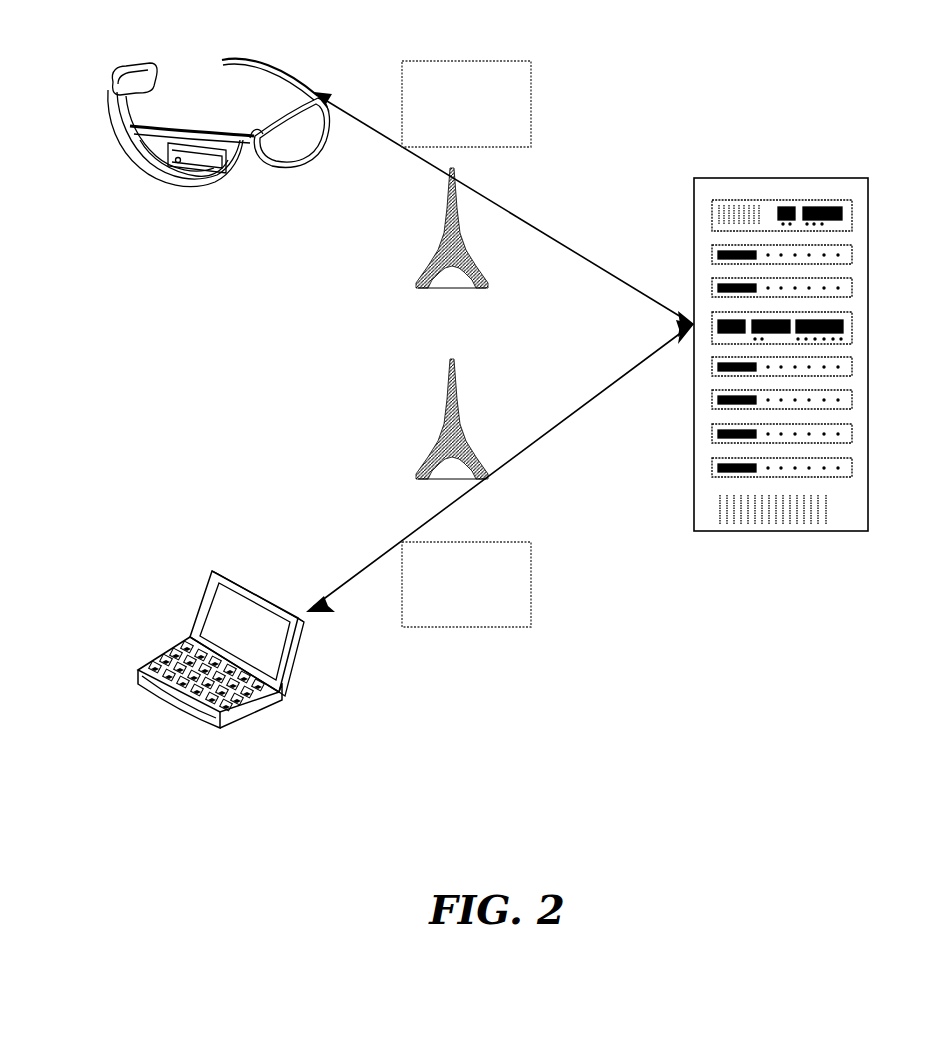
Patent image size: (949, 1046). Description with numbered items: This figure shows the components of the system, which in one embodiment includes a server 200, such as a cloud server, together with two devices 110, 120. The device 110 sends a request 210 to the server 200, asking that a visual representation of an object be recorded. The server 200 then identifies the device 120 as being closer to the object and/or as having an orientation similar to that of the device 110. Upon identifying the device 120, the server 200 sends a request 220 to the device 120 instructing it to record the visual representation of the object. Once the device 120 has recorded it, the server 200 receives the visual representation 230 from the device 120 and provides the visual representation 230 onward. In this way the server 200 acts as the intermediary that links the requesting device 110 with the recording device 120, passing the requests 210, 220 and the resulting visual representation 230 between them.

The device 110 is at (212, 571).
The device 120 is at (108, 88).
The server 200 is at (868, 348).
The request 210 is at (466, 584).
The request 220 is at (466, 104).
The visual representation 230 is at (425, 284).